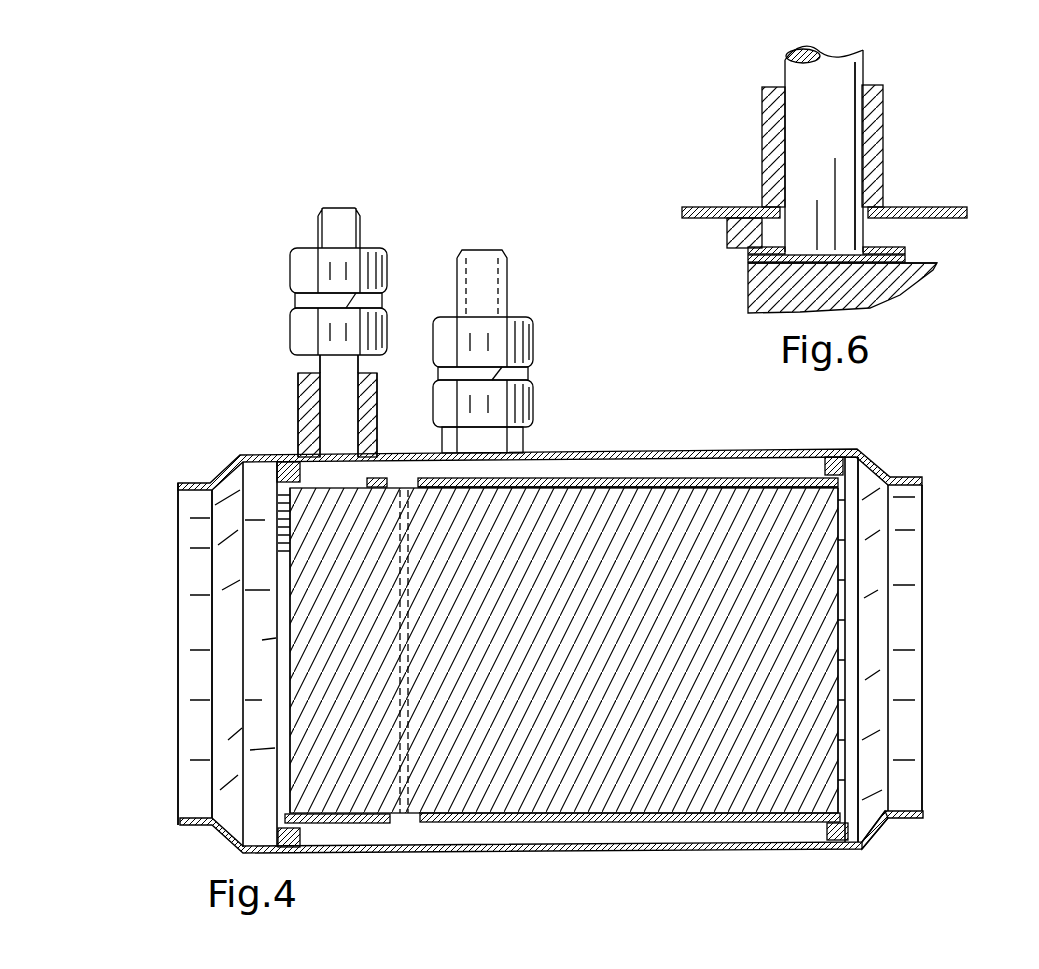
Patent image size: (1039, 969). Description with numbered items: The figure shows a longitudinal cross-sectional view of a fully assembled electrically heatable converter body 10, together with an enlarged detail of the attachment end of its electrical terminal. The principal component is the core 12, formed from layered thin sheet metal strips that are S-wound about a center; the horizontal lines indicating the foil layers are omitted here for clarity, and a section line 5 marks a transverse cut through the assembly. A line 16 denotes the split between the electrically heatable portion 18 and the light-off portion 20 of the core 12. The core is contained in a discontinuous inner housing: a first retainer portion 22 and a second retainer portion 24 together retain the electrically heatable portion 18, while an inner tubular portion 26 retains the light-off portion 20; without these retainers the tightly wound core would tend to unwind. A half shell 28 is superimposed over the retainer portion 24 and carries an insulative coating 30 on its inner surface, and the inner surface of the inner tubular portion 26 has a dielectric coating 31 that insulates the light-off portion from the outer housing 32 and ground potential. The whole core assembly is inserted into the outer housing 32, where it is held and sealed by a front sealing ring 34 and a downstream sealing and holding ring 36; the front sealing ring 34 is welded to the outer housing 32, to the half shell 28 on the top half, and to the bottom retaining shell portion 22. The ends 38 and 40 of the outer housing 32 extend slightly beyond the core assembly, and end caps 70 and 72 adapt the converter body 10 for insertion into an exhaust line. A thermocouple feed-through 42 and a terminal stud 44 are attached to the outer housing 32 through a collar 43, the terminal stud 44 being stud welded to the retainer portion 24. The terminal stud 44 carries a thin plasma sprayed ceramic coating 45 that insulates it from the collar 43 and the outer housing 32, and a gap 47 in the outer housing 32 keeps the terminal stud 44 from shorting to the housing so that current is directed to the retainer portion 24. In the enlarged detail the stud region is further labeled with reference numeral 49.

In FIG. 4, the converter body 10 is at (770, 862).
In FIG. 4, the core 12 is at (583, 778).
In FIG. 4, the line 16 is at (408, 692).
In FIG. 4, the electrically heatable portion 18 is at (353, 708).
In FIG. 6, the electrically heatable portion 18 is at (878, 309).
In FIG. 4, the light-off portion 20 is at (563, 673).
In FIG. 4, the first retainer portion 22 is at (365, 815).
In FIG. 4, the second retainer portion 24 is at (378, 488).
In FIG. 6, the second retainer portion 24 is at (898, 265).
In FIG. 4, the inner tubular portion 26 is at (600, 486).
In FIG. 4, the half shell 28 is at (393, 453).
In FIG. 6, the half shell 28 is at (905, 251).
In FIG. 6, the insulative coating 30 is at (905, 258).
In FIG. 4, the dielectric coating 31 is at (552, 490).
In FIG. 4, the outer housing 32 is at (350, 853).
In FIG. 6, the outer housing 32 is at (908, 207).
In FIG. 4, the front sealing ring 34 is at (278, 848).
In FIG. 6, the front sealing ring 34 is at (732, 244).
In FIG. 4, the downstream sealing and holding ring 36 is at (850, 822).
In FIG. 4, the end of the outer housing 38 is at (848, 583).
In FIG. 4, the end of the outer housing 40 is at (265, 590).
In FIG. 4, the thermocouple feed-through 42 is at (488, 287).
In FIG. 4, the collar 43 is at (297, 403).
In FIG. 6, the collar 43 is at (772, 173).
In FIG. 4, the terminal stud 44 is at (347, 229).
In FIG. 6, the terminal stud 44 is at (805, 116).
In FIG. 4, the ceramic coating 45 is at (300, 405).
In FIG. 4, the gap 47 is at (303, 450).
In FIG. 6, the gap 47 is at (866, 205).
In FIG. 6, the stud thread line 49 is at (862, 255).
In FIG. 4, the section line 5- 5 is at (730, 443).
In FIG. 4, the end cap 70 is at (193, 528).
In FIG. 4, the end cap 72 is at (908, 715).